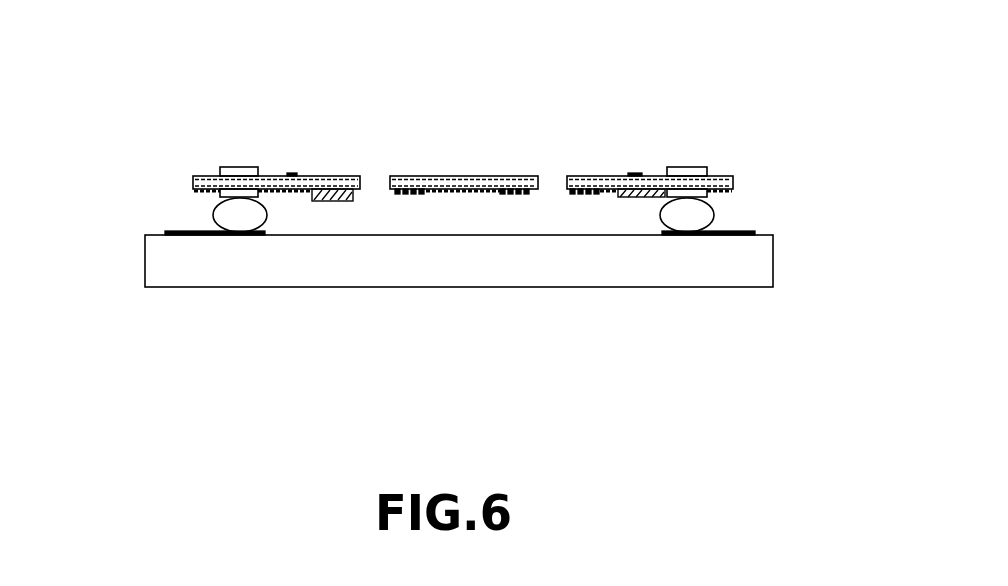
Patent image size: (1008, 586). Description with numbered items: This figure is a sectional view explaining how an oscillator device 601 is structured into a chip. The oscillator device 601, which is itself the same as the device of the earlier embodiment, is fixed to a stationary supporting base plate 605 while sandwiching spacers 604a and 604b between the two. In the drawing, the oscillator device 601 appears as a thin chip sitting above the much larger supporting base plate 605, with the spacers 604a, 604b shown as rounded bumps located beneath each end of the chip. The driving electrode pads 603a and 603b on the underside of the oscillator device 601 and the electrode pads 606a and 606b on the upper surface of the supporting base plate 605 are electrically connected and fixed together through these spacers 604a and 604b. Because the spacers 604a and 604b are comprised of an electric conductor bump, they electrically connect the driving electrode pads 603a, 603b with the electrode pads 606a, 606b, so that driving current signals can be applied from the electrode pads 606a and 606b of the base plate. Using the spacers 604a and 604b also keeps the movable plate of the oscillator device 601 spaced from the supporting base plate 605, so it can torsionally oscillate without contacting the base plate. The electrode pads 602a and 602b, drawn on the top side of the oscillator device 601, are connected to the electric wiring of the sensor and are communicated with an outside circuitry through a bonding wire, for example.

The oscillator device 601 is at (445, 150).
The electrode pad 602a is at (690, 150).
The electrode pad 602b is at (245, 163).
The driving electrode pad 603a is at (707, 196).
The driving electrode pad 603b is at (219, 198).
The spacer 604a is at (702, 218).
The spacer 604b is at (240, 213).
The supporting base plate 605 is at (337, 263).
The electrode pad 606a is at (732, 235).
The electrode pad 606b is at (187, 235).